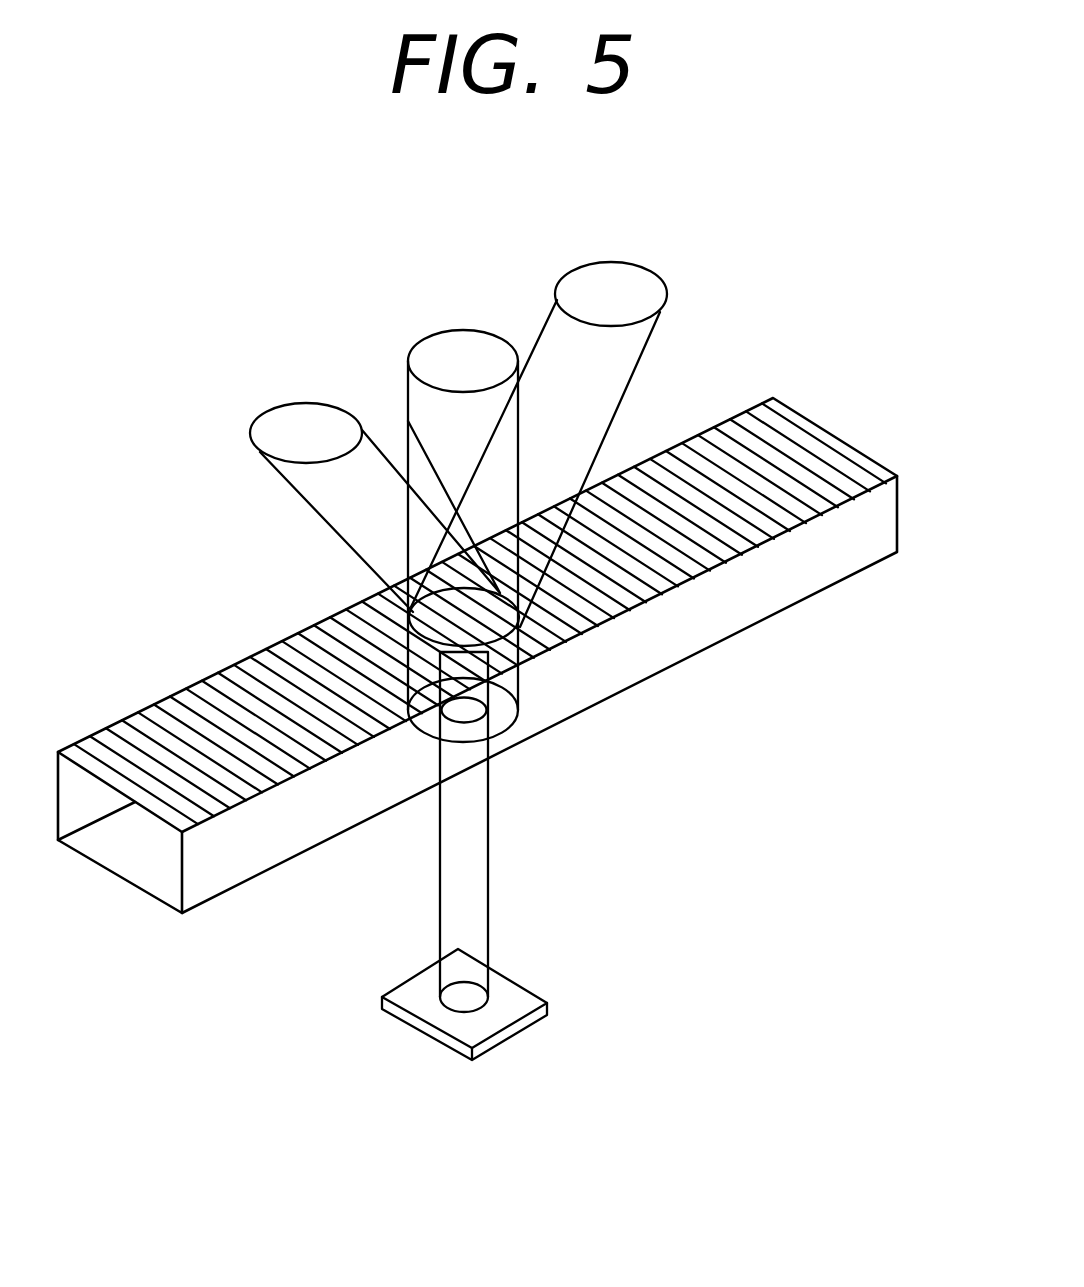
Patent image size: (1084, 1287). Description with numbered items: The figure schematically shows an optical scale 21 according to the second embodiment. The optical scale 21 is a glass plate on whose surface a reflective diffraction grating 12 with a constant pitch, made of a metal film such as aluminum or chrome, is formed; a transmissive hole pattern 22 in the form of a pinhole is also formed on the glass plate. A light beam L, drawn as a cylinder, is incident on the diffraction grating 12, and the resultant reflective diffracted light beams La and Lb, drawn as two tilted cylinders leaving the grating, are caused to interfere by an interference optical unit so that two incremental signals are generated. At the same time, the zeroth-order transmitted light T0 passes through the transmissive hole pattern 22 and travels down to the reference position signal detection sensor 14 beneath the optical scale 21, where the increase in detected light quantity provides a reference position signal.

The reflective diffraction grating 12 is at (268, 688).
The optical scale 21 is at (840, 437).
The transmissive hole pattern 22 is at (503, 758).
The reference position signal detection sensor 14 is at (495, 1010).
The 0-th order transmitted light T0 is at (473, 850).
The light beam L is at (458, 352).
The reflective diffracted light beam La is at (303, 422).
The reflective diffracted light beam Lb is at (613, 283).